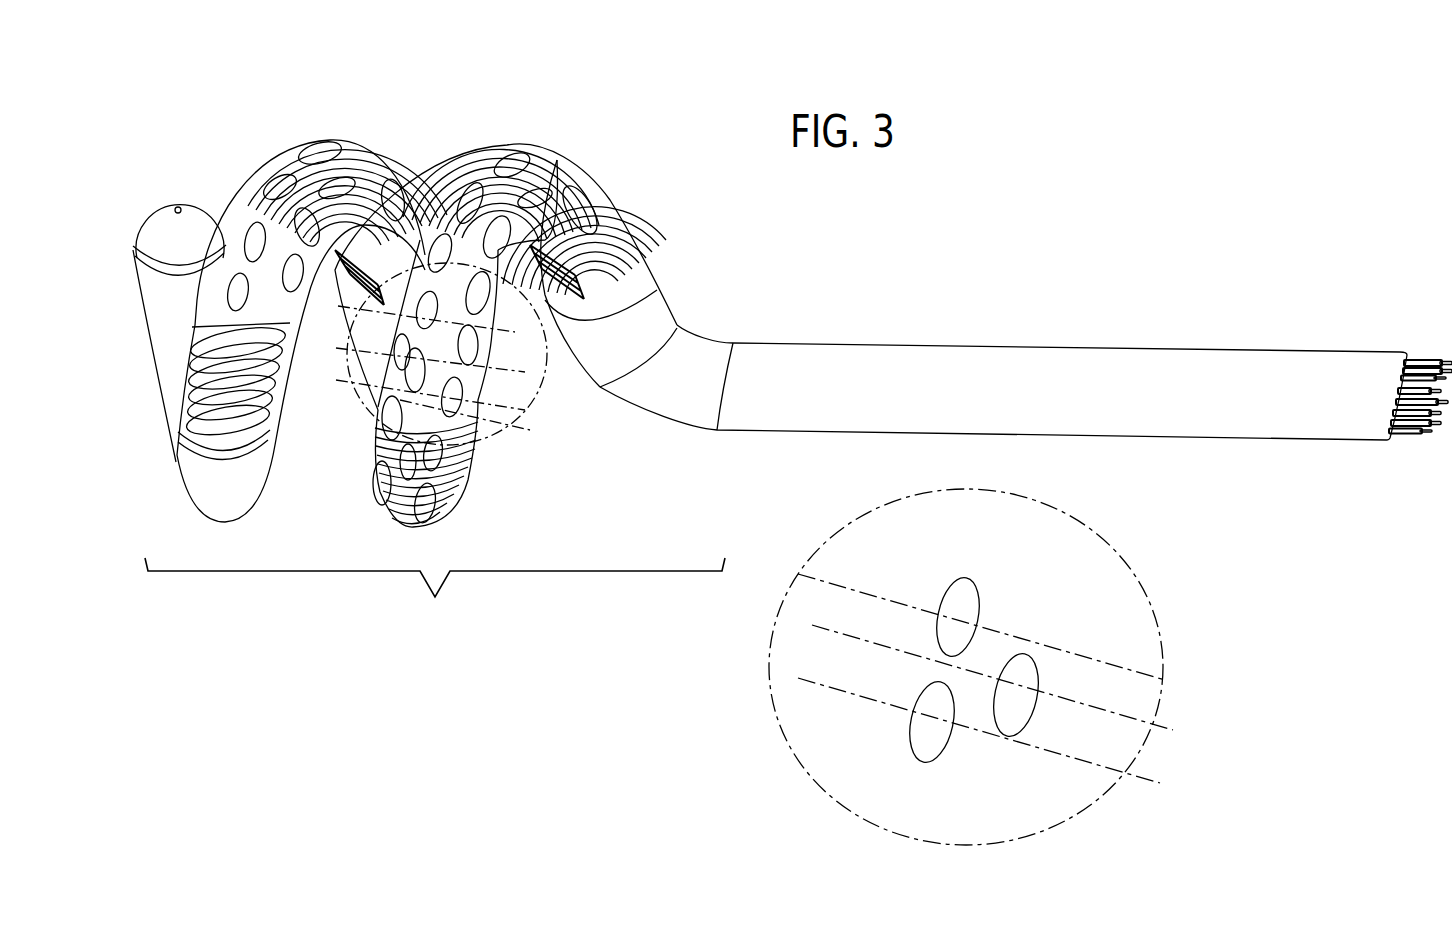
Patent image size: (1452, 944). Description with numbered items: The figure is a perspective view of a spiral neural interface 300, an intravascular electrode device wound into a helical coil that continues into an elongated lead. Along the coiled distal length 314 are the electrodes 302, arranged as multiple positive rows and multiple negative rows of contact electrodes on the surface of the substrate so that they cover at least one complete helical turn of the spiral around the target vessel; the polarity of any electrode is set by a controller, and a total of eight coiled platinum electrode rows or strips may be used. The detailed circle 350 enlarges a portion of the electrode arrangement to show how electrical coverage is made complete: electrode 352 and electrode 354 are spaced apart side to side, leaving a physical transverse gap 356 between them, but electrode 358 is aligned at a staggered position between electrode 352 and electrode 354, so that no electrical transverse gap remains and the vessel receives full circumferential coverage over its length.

The spiral neural interface 300 is at (127, 376).
The electrodes 302 is at (537, 193).
The distal length 314 is at (435, 601).
The detailed circle 350 is at (1163, 690).
The electrode 352 is at (923, 730).
The electrode 354 is at (967, 609).
The physical transverse gap 356 is at (943, 672).
The electrode 358 is at (1015, 715).